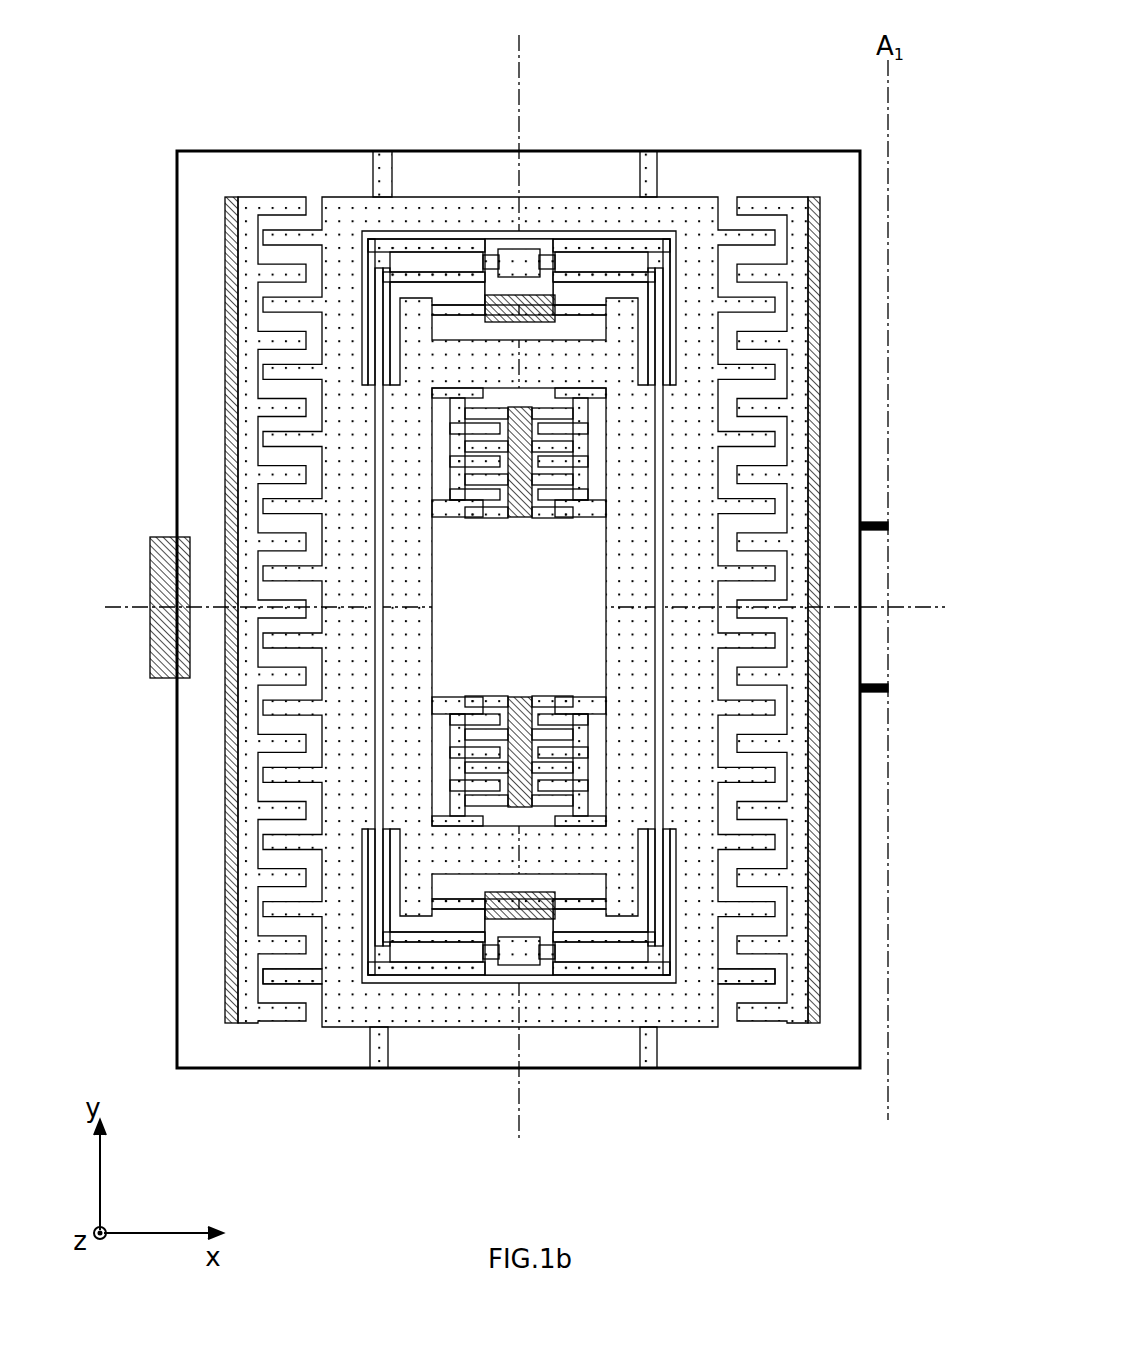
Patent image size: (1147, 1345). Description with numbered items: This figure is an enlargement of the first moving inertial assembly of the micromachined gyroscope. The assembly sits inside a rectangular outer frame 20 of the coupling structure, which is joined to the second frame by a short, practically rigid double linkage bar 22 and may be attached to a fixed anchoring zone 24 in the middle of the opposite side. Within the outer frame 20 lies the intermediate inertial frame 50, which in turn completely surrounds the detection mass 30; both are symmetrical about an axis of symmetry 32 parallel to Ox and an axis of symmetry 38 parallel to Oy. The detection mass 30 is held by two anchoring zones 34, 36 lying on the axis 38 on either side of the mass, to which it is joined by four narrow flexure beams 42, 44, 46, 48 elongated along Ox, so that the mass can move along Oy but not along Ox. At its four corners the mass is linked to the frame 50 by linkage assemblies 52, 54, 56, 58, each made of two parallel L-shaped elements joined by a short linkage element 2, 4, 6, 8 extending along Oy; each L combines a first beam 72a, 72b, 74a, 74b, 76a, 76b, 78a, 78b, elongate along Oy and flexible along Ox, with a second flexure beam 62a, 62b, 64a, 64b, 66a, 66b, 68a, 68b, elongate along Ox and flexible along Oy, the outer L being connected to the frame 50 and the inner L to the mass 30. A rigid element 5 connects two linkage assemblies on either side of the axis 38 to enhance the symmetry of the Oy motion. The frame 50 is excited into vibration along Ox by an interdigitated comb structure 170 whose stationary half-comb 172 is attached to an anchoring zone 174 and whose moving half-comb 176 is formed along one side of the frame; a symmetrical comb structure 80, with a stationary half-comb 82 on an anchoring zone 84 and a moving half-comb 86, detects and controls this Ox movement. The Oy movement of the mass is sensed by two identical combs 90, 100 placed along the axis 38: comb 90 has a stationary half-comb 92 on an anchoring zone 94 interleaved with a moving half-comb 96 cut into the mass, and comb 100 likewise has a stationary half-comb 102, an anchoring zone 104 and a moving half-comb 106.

The short linkage element 2 is at (490, 255).
The short linkage element 4 is at (552, 260).
The rigid element 5 is at (510, 250).
The short linkage element 6 is at (512, 968).
The short linkage element 8 is at (546, 968).
The outer frame 20 is at (177, 340).
The double linkage bar 22 is at (878, 688).
The anchoring zone 24 is at (152, 580).
The detection mass 30 is at (627, 548).
The axis of symmetry 32 is at (942, 607).
The anchoring zone 34 is at (537, 322).
The anchoring zone 36 is at (530, 890).
The axis of symmetry 38 is at (519, 66).
The flexure beam 42 is at (462, 305).
The flexure beam 44 is at (575, 305).
The flexure beam 46 is at (453, 902).
The flexure beam 48 is at (592, 902).
The intermediate inertial frame 50 is at (330, 497).
The linkage assembly 52 is at (367, 203).
The linkage assembly 54 is at (660, 205).
The linkage assembly 56 is at (432, 1016).
The linkage assembly 58 is at (607, 1017).
The second flexure beam 62a is at (400, 248).
The second flexure beam 62b is at (428, 278).
The second flexure beam 64a is at (638, 248).
The second flexure beam 64b is at (610, 278).
The second flexure beam 66a is at (460, 947).
The second flexure beam 66b is at (487, 963).
The second flexure beam 68a is at (582, 977).
The second flexure beam 68b is at (587, 947).
The first linkage beam 72a is at (367, 307).
The first linkage beam 72b is at (387, 312).
The first linkage beam 74a is at (667, 310).
The first linkage beam 74b is at (650, 300).
The first linkage beam 76a is at (368, 963).
The first linkage beam 76b is at (385, 1030).
The first linkage beam 78a is at (647, 932).
The first linkage beam 78b is at (668, 950).
The interdigitated comb structure 80 is at (821, 667).
The stationary half-comb 82 is at (768, 1021).
The anchoring zone 84 is at (820, 226).
The moving half-comb 86 is at (723, 977).
The interdigitated comb 90 is at (467, 475).
The stationary half-comb 92 is at (467, 427).
The anchoring zone 94 is at (510, 500).
The moving half-comb 96 is at (467, 446).
The interdigitated comb 100 is at (461, 730).
The stationary half-comb 102 is at (467, 722).
The anchoring zone 104 is at (520, 697).
The moving half-comb 106 is at (467, 775).
The interdigitated comb structure 170 is at (210, 668).
The stationary half-comb 172 is at (325, 1106).
The anchoring zone 174 is at (228, 213).
The moving half-comb 176 is at (293, 977).